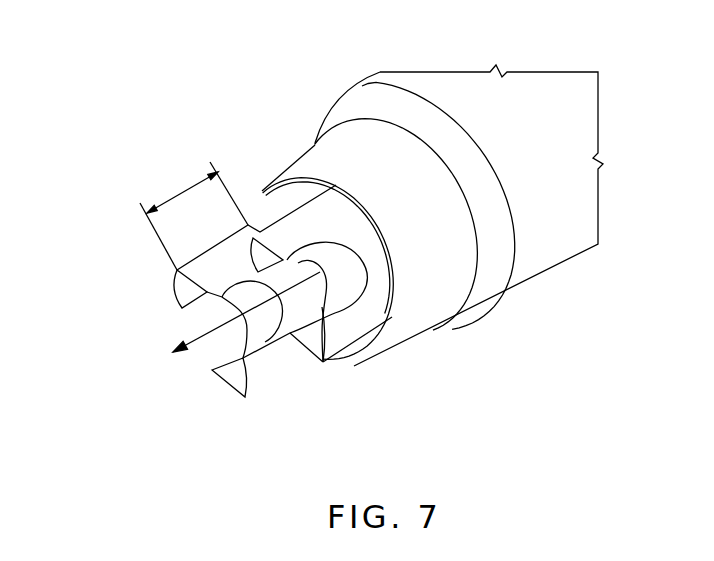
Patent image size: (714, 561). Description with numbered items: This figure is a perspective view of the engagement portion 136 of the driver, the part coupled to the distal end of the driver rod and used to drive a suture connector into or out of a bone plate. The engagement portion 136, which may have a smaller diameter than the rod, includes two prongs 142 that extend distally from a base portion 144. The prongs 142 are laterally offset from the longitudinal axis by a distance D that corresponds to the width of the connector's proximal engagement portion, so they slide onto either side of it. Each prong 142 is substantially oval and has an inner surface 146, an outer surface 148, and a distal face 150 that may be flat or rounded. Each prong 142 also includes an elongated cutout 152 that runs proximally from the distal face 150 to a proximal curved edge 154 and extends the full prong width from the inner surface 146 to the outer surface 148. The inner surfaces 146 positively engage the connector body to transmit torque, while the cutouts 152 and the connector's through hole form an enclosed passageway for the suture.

The engagement portion 136 is at (163, 102).
The base portion 144 is at (314, 168).
The outer surface 148 is at (353, 327).
The inner surface 146 is at (280, 360).
The prongs 142 is at (226, 246).
The distal face 150 is at (214, 368).
The proximal curved edge 154 is at (266, 315).
The elongated cutout 152 is at (202, 313).